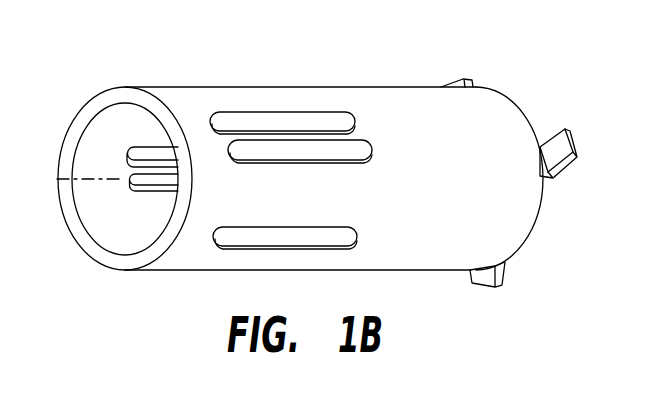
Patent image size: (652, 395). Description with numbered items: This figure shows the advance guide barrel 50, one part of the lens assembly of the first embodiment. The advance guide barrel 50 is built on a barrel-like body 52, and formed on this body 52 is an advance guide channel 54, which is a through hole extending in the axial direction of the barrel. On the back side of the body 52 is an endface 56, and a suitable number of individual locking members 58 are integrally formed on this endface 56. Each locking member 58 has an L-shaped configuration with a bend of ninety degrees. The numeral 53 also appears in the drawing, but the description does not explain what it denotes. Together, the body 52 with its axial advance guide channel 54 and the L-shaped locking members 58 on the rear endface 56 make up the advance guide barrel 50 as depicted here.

The advance guide barrel 50 is at (342, 154).
The barrel-like body 52 is at (208, 88).
The cylindrical housing body 53 is at (493, 108).
The advance guide channel 54 is at (327, 123).
The endface 56 is at (527, 239).
The locking member 58 is at (568, 138).